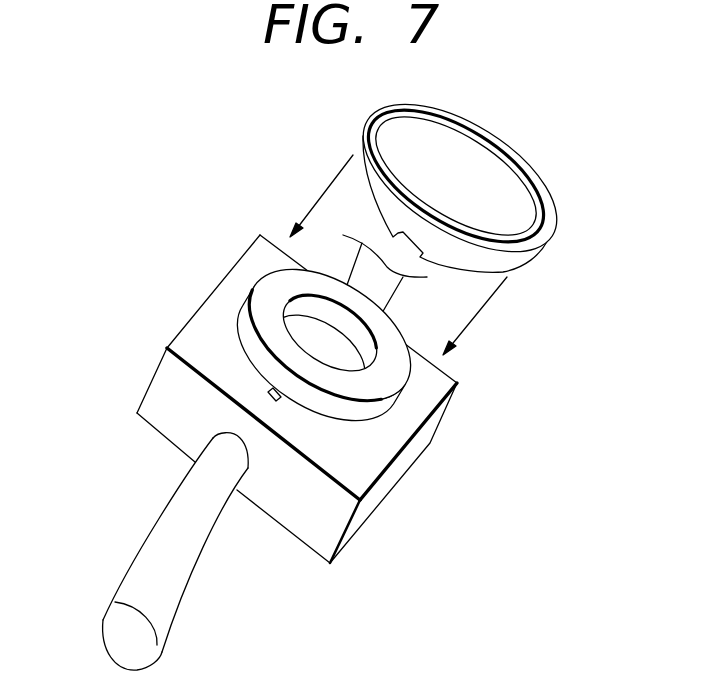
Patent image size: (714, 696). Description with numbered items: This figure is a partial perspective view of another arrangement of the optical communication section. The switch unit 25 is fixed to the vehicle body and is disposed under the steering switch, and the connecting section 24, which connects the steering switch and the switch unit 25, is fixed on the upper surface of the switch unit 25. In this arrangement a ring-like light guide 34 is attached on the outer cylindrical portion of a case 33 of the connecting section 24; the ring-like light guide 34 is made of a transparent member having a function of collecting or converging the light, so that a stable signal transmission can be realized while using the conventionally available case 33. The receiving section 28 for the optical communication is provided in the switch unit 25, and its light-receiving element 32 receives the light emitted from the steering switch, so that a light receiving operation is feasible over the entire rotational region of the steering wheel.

The connecting section 24 is at (270, 289).
The case 33 is at (244, 344).
The light-receiving element 32 is at (280, 397).
The receiving section 28 is at (169, 417).
The ring-like light guide 34 is at (498, 262).
The switch unit 25 is at (380, 488).